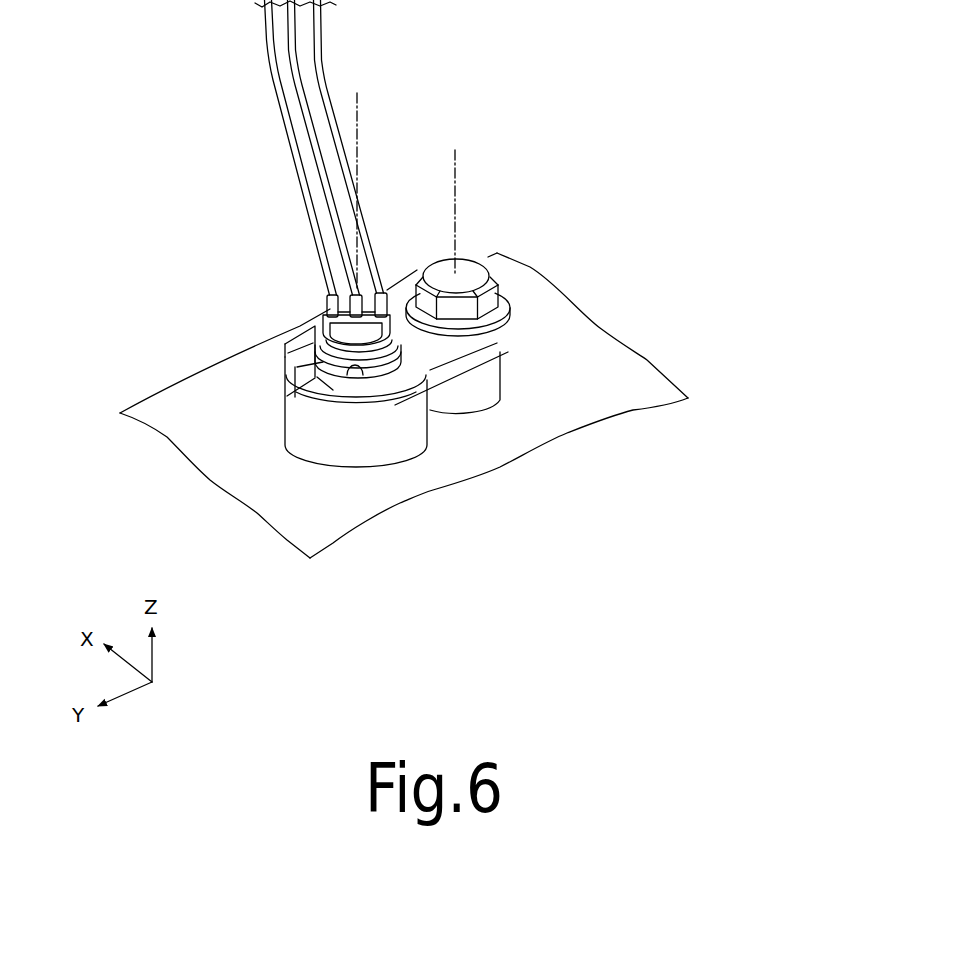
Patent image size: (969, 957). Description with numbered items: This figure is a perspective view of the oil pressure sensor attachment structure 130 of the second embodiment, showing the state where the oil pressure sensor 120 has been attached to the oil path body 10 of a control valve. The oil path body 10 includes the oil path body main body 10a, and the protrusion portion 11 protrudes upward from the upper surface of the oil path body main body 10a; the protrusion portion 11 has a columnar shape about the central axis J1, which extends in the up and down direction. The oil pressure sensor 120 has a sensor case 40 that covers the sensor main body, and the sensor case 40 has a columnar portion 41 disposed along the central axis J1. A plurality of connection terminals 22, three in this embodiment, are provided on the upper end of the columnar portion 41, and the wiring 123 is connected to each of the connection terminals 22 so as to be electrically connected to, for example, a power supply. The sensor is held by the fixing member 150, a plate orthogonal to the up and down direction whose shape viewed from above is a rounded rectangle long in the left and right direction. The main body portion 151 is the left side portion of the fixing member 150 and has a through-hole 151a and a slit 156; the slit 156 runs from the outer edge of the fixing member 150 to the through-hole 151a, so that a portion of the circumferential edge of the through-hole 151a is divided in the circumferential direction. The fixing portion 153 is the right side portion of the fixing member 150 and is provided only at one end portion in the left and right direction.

The oil path body 10 is at (143, 392).
The oil path body main body 10a is at (563, 405).
The protrusion portion 11 is at (392, 442).
The connection terminals 22 is at (377, 292).
The sensor case 40 is at (276, 274).
The columnar portion 41 is at (405, 362).
The oil pressure sensor 120 is at (396, 300).
The wiring 123 is at (320, 62).
The oil pressure sensor attachment structure 130 is at (620, 176).
The fixing member 150 is at (574, 252).
The main body portion 151 is at (226, 451).
The through-hole 151a is at (354, 376).
The fixing portion 153 is at (513, 306).
The slit 156 is at (290, 376).
The central axis J1 is at (360, 101).